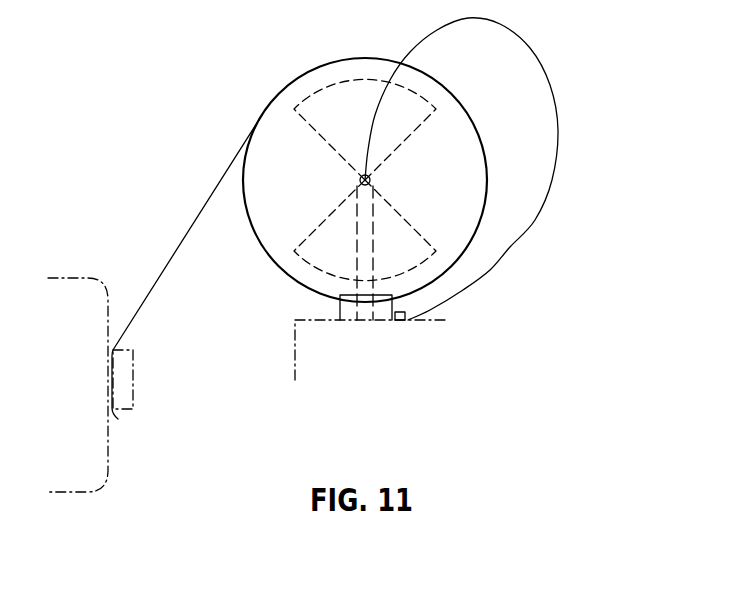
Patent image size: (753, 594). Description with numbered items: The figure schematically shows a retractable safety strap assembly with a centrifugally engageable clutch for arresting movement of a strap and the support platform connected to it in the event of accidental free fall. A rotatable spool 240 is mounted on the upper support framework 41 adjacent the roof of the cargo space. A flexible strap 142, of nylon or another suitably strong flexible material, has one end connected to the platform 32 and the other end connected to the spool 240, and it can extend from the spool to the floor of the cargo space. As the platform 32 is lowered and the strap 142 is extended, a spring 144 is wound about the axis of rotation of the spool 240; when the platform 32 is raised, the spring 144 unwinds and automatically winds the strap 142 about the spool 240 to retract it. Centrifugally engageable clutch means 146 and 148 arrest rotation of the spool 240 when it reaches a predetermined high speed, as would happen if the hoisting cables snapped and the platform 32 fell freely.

The rotatable spool 240 is at (326, 63).
The spring 144 is at (553, 82).
The centrifugally engageable clutch means 146 is at (402, 143).
The centrifugally engageable clutch means 148 is at (347, 322).
The upper support framework 41 is at (293, 338).
The flexible strap 142 is at (188, 228).
The platform 32 is at (90, 279).